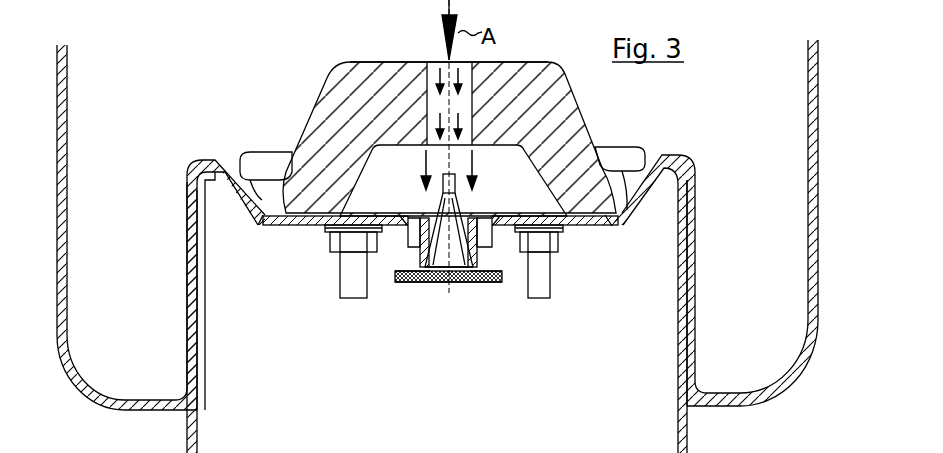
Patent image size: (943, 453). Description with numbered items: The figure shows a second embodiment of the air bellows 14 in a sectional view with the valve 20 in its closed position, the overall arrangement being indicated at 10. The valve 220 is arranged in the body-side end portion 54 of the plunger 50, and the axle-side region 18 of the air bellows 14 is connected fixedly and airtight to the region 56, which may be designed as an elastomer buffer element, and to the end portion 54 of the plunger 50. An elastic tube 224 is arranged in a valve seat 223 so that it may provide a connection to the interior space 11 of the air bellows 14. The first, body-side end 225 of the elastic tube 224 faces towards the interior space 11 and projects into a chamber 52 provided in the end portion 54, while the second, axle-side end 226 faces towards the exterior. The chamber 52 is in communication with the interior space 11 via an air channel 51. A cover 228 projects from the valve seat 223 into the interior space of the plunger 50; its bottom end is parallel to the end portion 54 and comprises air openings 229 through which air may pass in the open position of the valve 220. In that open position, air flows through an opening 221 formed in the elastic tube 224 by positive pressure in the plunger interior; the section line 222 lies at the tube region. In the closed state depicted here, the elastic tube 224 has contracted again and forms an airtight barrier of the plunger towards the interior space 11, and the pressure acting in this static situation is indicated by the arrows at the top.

The arrangement 10 is at (239, 106).
The interior space 11 is at (727, 131).
The air bellows 14 is at (807, 129).
The axle-side region 18 is at (797, 372).
The valve 20 is at (403, 198).
The plunger 50 is at (679, 404).
The air channel 51 is at (437, 63).
The chamber 52 is at (328, 226).
The end portion 54 is at (600, 223).
The region 56 is at (572, 110).
The valve 220 is at (400, 278).
The opening 221 is at (412, 282).
The flange plate portion 222 is at (478, 283).
The valve seat 223 is at (493, 243).
The elastic tube 224 is at (465, 207).
The first, body-side end 225 is at (473, 190).
The second, axle-side end 226 is at (420, 253).
The cover 228 is at (481, 284).
The air openings 229 is at (468, 284).